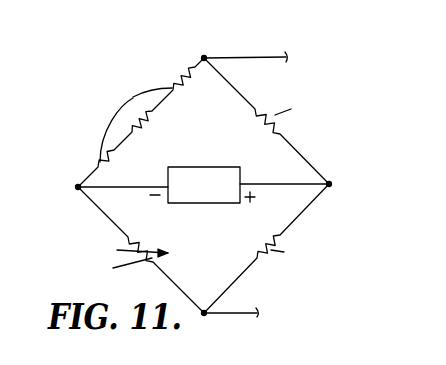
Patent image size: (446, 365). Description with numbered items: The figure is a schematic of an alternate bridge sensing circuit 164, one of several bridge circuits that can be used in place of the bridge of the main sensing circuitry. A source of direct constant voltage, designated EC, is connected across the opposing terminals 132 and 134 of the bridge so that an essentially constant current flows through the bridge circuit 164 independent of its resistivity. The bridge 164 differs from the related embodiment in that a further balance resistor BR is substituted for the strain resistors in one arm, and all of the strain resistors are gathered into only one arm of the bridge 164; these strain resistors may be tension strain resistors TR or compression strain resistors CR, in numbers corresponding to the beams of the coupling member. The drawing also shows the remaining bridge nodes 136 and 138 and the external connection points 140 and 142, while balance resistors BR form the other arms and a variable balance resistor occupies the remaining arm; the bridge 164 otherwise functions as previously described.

The terminal 132 is at (78, 187).
The terminal 134 is at (329, 184).
The bridge junction (top node) 136 is at (204, 58).
The bridge junction (bottom node) 138 is at (204, 313).
The top supply terminal 140 is at (268, 56).
The bottom supply terminal 142 is at (248, 314).
The bridge sensing circuit 164 is at (170, 185).